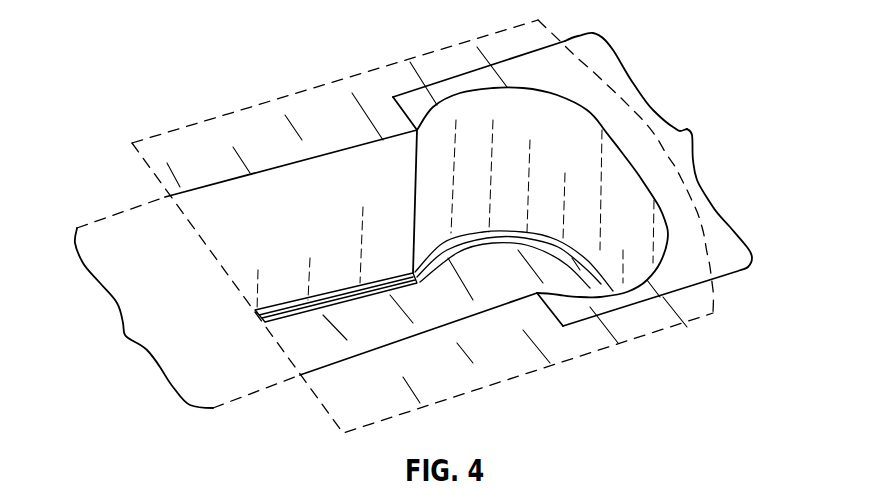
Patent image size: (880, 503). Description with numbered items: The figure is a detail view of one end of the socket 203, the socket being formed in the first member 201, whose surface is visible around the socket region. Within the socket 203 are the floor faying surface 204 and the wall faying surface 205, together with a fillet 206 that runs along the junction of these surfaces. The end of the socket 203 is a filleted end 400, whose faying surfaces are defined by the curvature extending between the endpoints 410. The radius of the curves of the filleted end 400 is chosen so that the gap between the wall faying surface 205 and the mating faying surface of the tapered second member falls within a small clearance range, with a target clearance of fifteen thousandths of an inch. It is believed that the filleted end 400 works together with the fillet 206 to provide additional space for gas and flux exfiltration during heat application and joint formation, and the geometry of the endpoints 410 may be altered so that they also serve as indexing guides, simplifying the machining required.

The first member 201 is at (190, 153).
The socket 203 is at (117, 337).
The floor faying surface 204 is at (310, 357).
The wall faying surface 205 is at (287, 187).
The fillet 206 is at (263, 327).
The filleted end 400 is at (687, 129).
The endpoints 410 is at (417, 130).